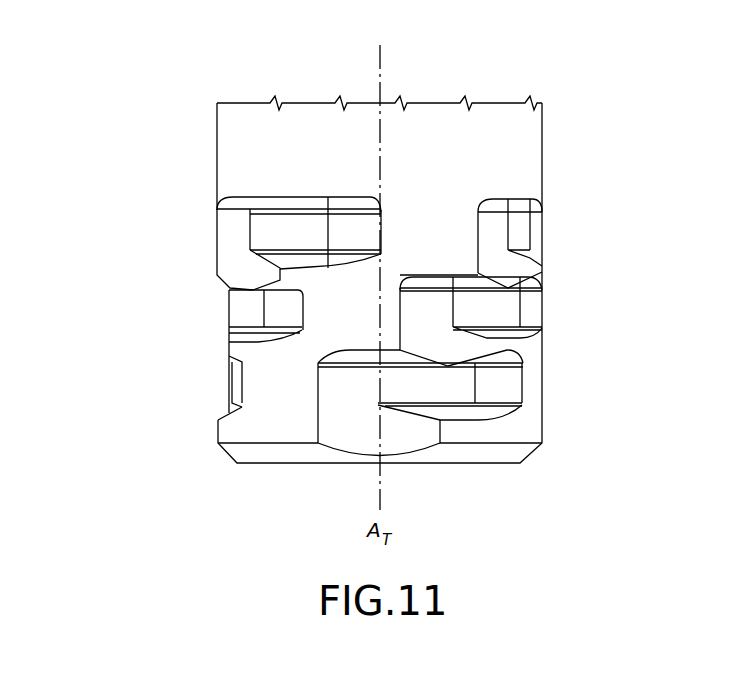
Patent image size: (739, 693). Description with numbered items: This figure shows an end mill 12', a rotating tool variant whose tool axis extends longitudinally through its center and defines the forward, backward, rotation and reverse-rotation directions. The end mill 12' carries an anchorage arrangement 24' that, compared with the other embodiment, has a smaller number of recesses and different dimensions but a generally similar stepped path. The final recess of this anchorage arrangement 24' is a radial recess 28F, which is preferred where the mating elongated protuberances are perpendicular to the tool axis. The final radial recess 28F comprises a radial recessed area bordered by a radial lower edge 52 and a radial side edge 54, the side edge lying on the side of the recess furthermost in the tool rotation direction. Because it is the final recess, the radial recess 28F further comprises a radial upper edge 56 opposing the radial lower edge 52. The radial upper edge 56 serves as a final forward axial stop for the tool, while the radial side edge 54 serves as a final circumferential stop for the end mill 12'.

The end mill 12' is at (319, 247).
The final radial recess 28F is at (315, 194).
The anchorage arrangement 24' is at (467, 162).
The radial upper edge 56 is at (293, 197).
The radial side edge 54 is at (387, 237).
The radial lower edge 52 is at (310, 267).